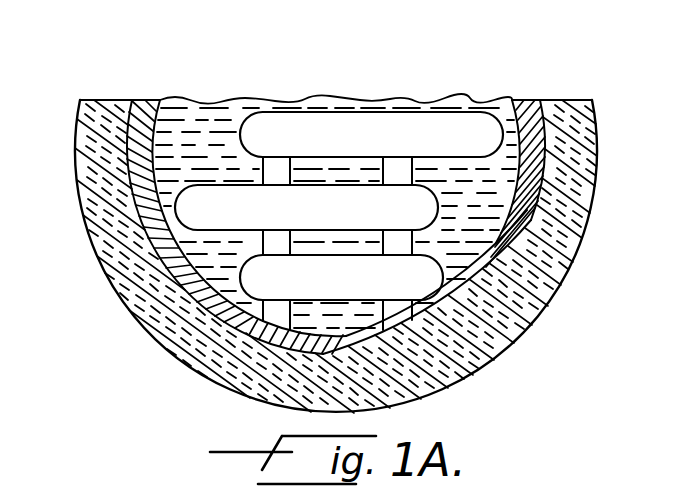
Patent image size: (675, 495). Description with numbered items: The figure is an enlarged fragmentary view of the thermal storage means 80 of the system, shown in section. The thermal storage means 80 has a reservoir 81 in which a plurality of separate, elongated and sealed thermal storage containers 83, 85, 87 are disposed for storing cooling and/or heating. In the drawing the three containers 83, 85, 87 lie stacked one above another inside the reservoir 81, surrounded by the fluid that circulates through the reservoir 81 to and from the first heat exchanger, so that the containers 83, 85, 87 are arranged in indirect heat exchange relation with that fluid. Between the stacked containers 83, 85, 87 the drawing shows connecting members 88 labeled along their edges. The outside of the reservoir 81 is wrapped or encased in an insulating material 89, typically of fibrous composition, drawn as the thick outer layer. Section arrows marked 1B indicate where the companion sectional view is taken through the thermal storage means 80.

The thermal storage means 80 is at (160, 152).
The thermal storage reservoir 81 is at (433, 313).
The thermal storage container 83 is at (378, 148).
The thermal storage container 85 is at (322, 219).
The thermal storage container 87 is at (362, 292).
The connecting webs 88 is at (262, 313).
The insulating material 89 is at (523, 330).
The section line 1B— 1B is at (215, 165).